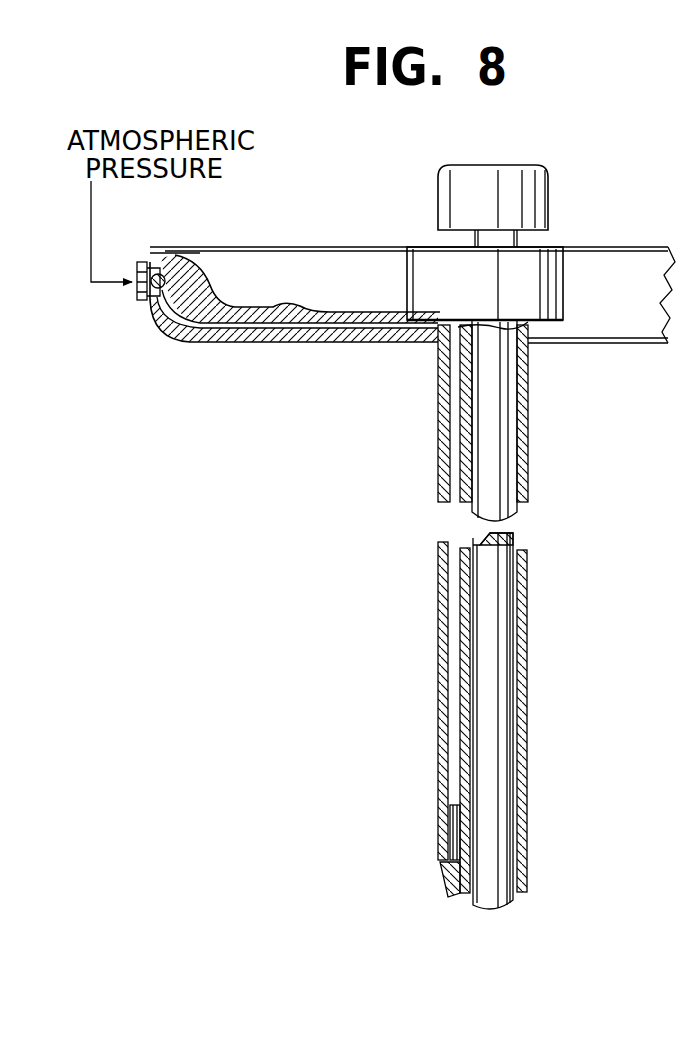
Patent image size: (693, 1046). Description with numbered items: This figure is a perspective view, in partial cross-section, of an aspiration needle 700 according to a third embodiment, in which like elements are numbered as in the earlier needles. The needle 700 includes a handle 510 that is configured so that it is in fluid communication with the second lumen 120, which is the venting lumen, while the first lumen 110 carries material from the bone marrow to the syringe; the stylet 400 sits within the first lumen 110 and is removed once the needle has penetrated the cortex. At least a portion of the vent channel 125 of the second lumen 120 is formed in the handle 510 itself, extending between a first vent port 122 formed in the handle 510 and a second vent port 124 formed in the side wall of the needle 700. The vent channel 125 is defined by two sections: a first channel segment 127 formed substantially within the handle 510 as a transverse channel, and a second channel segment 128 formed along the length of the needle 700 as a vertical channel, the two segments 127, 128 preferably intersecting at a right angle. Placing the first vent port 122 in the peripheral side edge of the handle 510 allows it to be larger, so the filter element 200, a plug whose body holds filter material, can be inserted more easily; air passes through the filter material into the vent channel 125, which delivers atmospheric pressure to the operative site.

The aspiration needle 700 is at (410, 421).
The first channel segment 127 is at (270, 328).
The first vent port 122 is at (140, 284).
The filter element 200 is at (165, 276).
The stylet 400 is at (535, 185).
The handle 510 is at (630, 320).
The first lumen 110 is at (477, 614).
The second channel segment 128 is at (455, 587).
The vent channel 125 is at (455, 673).
The second lumen 120 is at (466, 712).
The second vent port 124 is at (408, 860).